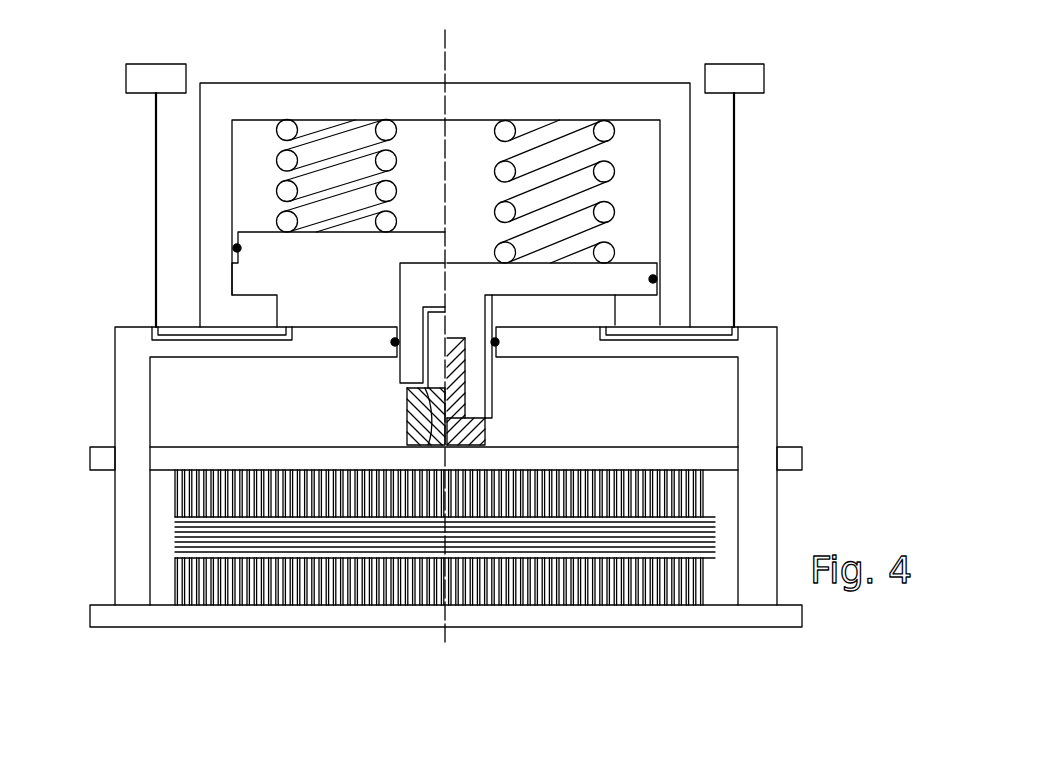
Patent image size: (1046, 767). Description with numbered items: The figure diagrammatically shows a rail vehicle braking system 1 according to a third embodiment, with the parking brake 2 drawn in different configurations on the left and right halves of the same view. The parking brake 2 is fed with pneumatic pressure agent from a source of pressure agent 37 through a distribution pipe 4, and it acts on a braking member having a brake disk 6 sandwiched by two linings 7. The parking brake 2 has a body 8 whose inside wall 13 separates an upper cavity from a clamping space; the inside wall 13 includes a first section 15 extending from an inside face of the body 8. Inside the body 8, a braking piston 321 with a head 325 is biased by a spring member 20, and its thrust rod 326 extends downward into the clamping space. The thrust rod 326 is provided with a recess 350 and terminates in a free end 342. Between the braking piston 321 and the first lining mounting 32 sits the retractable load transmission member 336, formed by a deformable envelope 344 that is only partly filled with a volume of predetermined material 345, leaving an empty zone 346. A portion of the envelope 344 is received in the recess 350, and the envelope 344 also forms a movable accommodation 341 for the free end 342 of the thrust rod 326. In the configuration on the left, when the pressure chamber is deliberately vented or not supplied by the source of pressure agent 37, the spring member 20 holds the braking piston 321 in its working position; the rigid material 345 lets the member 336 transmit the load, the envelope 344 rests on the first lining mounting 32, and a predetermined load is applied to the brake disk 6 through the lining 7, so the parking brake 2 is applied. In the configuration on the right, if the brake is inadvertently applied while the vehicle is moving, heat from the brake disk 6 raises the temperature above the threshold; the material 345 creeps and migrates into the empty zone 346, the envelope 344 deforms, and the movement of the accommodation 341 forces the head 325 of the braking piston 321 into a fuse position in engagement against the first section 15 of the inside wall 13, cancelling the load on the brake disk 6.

The rail vehicle braking system 1 is at (93, 193).
The parking brake 2 is at (126, 298).
The distribution pipe 4 is at (157, 145).
The brake disk 6 is at (193, 538).
The linings 7 is at (193, 492).
The body 8 is at (270, 97).
The inside wall 13 is at (653, 325).
The first section 15 is at (635, 295).
The spring member 20 is at (334, 142).
The first lining mounting 32 is at (182, 457).
The source of pressure agent 37 is at (137, 80).
The braking piston 321 is at (330, 263).
The head 325 is at (654, 276).
The thrust rod 326 is at (442, 293).
The retractable load transmission member 336 is at (384, 410).
The movable accommodation 341 is at (436, 425).
The free end 342 is at (485, 420).
The deformable envelope 344 is at (485, 440).
The predetermined material 345 is at (457, 403).
The empty zone 346 is at (437, 362).
The recess 350 is at (424, 352).